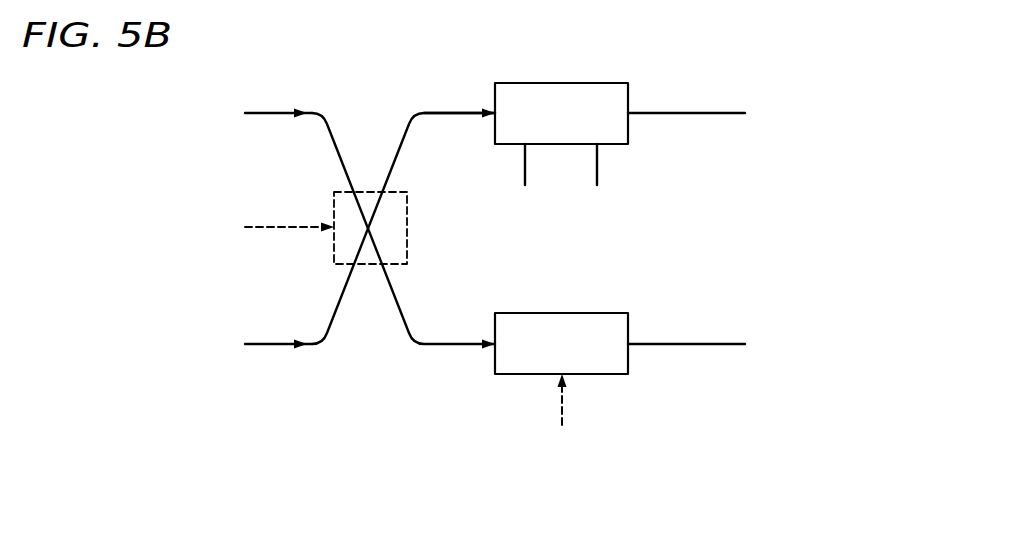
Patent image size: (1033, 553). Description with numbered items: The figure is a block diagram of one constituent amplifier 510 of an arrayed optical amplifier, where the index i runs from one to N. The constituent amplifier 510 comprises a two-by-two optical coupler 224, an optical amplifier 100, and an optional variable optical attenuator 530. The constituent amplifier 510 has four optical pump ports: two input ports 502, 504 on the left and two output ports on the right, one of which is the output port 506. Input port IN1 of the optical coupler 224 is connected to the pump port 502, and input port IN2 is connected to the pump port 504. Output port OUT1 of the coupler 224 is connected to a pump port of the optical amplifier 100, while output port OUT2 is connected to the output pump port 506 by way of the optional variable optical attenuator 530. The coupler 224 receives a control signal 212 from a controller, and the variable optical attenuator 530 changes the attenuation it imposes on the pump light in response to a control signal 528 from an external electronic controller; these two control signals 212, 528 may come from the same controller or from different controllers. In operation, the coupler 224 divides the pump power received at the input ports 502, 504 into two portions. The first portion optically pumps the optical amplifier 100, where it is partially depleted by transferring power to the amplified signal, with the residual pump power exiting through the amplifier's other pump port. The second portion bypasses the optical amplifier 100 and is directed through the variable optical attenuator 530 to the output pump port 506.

The constituent amplifier 510 is at (114, 95).
The optical pump port 502 is at (267, 112).
The optical pump port 504 is at (268, 348).
The 2×2 optical coupler 224 is at (369, 304).
The control signal 212 is at (262, 226).
The optical amplifier 100 is at (566, 83).
The variable optical attenuator 530 is at (566, 313).
The optical pump port 506 is at (690, 340).
The control signal 528 is at (565, 412).